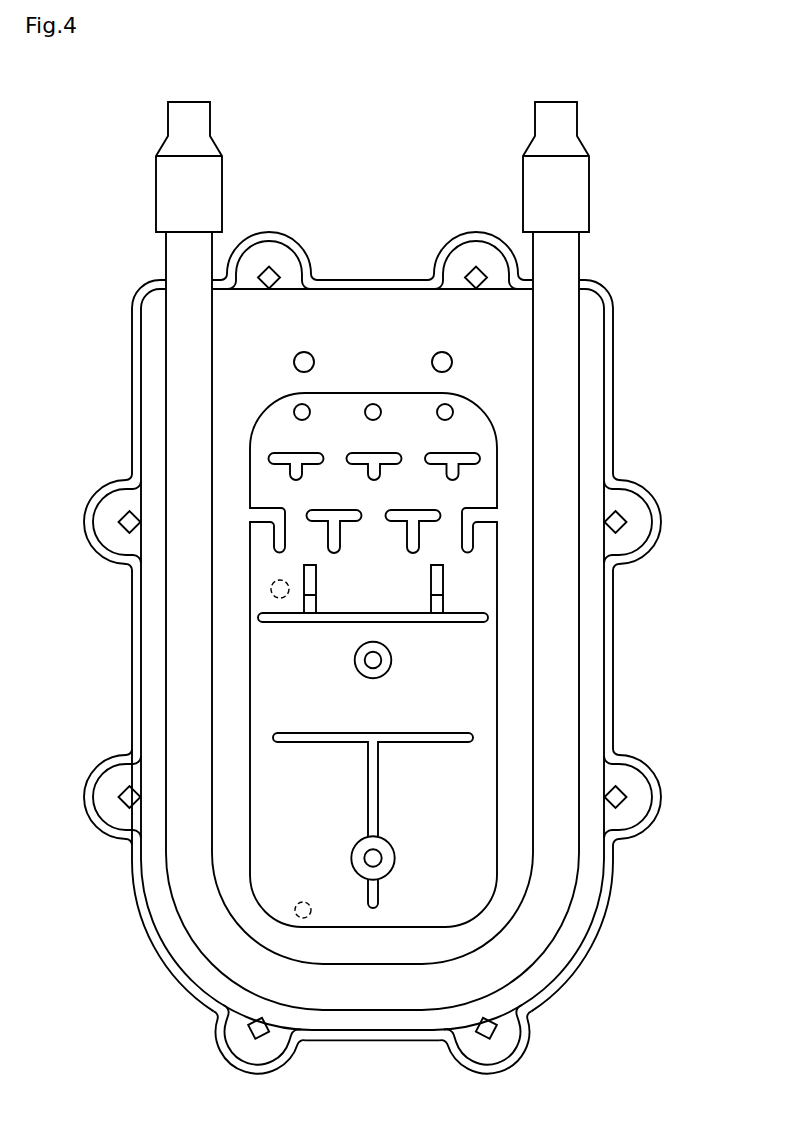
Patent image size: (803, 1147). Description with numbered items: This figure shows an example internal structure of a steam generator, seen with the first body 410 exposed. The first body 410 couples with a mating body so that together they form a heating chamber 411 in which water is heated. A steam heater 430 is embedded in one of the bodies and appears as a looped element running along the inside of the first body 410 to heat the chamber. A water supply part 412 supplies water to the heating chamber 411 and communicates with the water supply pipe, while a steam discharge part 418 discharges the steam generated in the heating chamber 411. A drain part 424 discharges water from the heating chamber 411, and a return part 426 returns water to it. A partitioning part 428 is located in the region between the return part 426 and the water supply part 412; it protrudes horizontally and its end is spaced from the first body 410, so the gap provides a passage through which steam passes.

The first body 410 is at (608, 693).
The heating chamber 411 is at (452, 716).
The water supply part 412 is at (375, 660).
The steam discharge part 418 is at (302, 410).
The drain part 424 is at (295, 909).
The return part 426 is at (272, 590).
The partitioning part 428 is at (387, 613).
The steam heater 430 is at (567, 253).